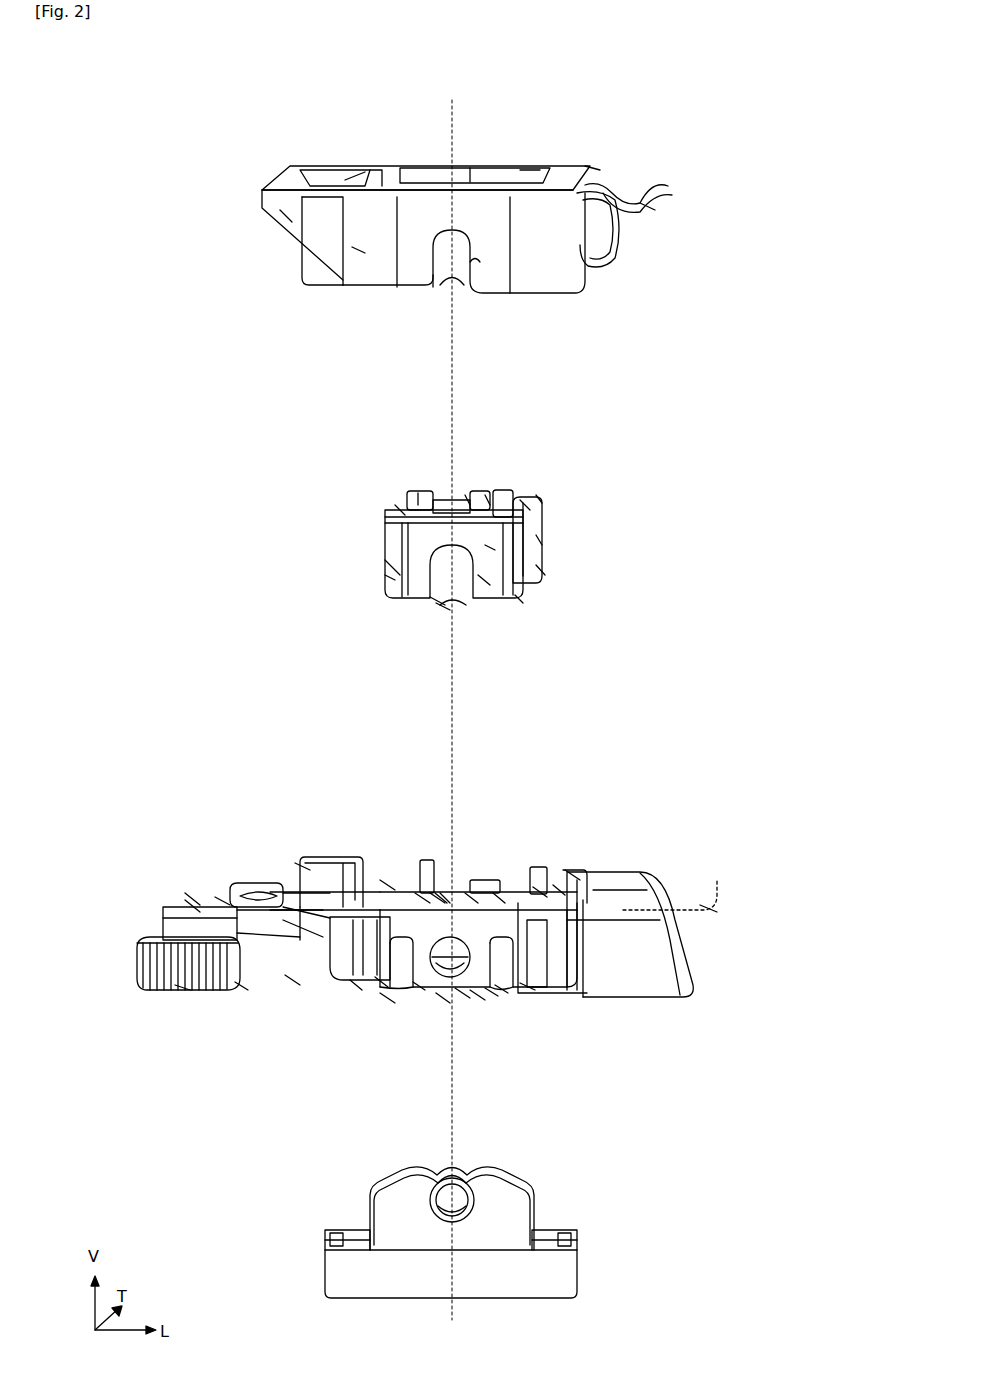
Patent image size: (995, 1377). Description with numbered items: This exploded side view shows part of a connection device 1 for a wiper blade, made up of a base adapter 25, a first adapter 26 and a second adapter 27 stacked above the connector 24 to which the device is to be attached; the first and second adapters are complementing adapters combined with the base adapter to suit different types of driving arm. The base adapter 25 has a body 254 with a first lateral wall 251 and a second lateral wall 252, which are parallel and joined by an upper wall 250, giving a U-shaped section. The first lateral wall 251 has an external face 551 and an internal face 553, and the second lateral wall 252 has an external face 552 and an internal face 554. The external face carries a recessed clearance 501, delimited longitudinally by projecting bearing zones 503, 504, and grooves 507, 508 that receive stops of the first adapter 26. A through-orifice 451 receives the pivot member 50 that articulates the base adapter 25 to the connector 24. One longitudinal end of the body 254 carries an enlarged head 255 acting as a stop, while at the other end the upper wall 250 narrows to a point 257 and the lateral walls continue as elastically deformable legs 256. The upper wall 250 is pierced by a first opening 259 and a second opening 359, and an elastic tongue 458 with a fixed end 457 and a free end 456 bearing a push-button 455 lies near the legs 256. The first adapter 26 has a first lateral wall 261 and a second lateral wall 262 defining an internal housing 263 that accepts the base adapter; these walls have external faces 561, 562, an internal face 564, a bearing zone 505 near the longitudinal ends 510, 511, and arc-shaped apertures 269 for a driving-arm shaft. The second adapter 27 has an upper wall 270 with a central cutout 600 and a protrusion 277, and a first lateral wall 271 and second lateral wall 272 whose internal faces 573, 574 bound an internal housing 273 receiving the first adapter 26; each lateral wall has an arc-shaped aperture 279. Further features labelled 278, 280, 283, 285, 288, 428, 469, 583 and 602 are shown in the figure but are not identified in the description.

The connection device 1 is at (113, 96).
The second adapter 27 is at (511, 284).
The second lateral wall 272 is at (318, 132).
The internal face 574 is at (291, 143).
The protrusion 277 is at (518, 129).
The cutout 600 is at (579, 123).
The upper wall 270 is at (645, 137).
The cover hook 278 is at (714, 204).
The first lateral wall 271 is at (221, 245).
The internal face 573 is at (236, 288).
The internal housing 273 is at (329, 300).
The aperture 279 is at (547, 298).
The first adapter 26 is at (585, 604).
The external face 562 is at (414, 425).
The holder projection 288 is at (507, 434).
The holder top plate 280 is at (536, 450).
The internal face 564 is at (593, 455).
The second lateral wall 262 is at (633, 478).
The holder rib 285 is at (632, 534).
The longitudinal end 510 is at (644, 585).
The bearing zone 505 is at (620, 617).
The external face 561 is at (312, 472).
The longitudinal end 511 is at (280, 542).
The groove 508 is at (390, 816).
The first lateral wall 261 is at (282, 599).
The internal housing 263 is at (345, 627).
The aperture 269 is at (508, 617).
The holder hook 583 is at (545, 625).
The base adapter 25 is at (450, 1006).
The knob 469 is at (153, 829).
The mounting bracket 428 is at (152, 863).
The point 257 is at (198, 836).
The push-button 455 is at (258, 809).
The fixed end 457 is at (325, 826).
The second opening 359 is at (368, 833).
The internal face 554 is at (400, 821).
The engagement portion 602 is at (419, 807).
The external face 552 is at (430, 830).
The top plate 283 is at (479, 810).
The upper wall 250 is at (502, 825).
The second lateral wall 252 is at (570, 810).
The first opening 259 is at (630, 821).
The body 254 is at (646, 833).
The head 255 is at (719, 883).
The elastically deformable leg 256 is at (145, 1023).
The free end 456 is at (177, 1045).
The tongue 458 is at (228, 1040).
The bearing zone 503 is at (307, 1020).
The groove 507 is at (341, 1023).
The external face 551 is at (325, 1045).
The internal face 553 is at (403, 1057).
The through-orifice 451 is at (434, 1053).
The clearance 501 is at (478, 1061).
The pivot member 50 is at (511, 1076).
The first lateral wall 251 is at (533, 1050).
The bearing zone 504 is at (585, 1039).
The connector 24 is at (525, 1247).